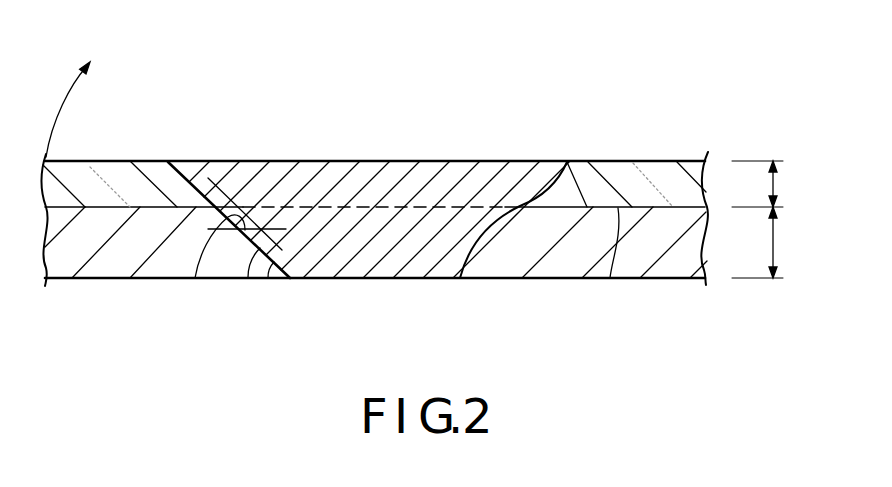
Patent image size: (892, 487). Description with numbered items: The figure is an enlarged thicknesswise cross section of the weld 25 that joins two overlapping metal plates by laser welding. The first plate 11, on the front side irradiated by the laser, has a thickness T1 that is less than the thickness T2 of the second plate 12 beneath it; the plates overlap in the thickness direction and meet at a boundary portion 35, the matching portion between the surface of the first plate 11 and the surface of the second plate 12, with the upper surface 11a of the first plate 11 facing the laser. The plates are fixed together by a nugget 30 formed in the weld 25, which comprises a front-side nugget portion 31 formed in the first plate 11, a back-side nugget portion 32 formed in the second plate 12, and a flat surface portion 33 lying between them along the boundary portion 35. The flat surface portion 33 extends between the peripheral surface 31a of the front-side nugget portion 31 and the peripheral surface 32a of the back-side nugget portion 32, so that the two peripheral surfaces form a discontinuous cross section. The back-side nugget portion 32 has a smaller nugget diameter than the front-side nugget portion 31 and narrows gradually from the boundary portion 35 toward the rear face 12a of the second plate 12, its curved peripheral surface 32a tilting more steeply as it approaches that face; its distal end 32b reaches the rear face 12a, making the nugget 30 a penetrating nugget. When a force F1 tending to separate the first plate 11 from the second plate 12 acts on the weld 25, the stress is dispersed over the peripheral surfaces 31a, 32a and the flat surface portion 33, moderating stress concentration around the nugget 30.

The weld 25 is at (433, 98).
The nugget 30 is at (500, 161).
The front-side nugget portion 31 is at (343, 172).
The peripheral surface of the front-side nugget portion 31a is at (176, 182).
The back-side nugget portion 32 is at (358, 264).
The peripheral surface of the back-side nugget portion 32a is at (236, 268).
The distal end of the back-side nugget portion 32b is at (436, 266).
The flat surface portion 33 is at (213, 215).
The boundary portion 35 is at (610, 278).
The first plate 11 is at (650, 162).
The surface of first sheet layer 11a is at (600, 162).
The second plate 12 is at (678, 246).
The rear face of the second plate 12a is at (510, 280).
The force F1 is at (78, 93).
The thickness of the first plate T1 is at (778, 184).
The thickness of the second plate T2 is at (778, 242).